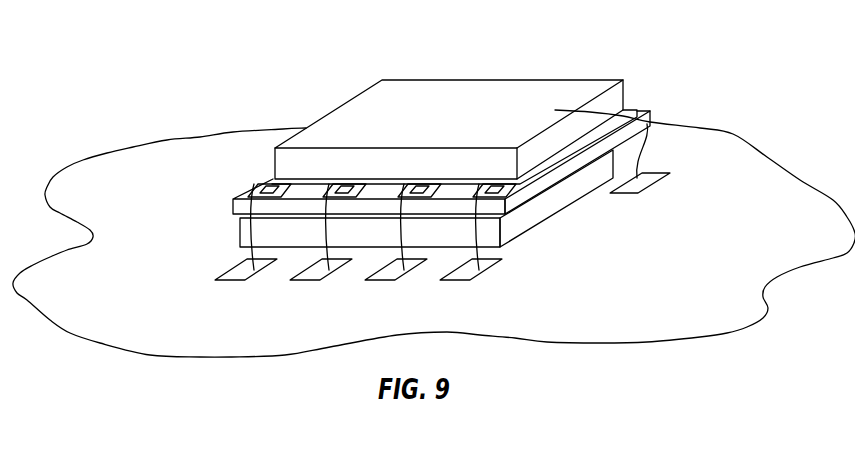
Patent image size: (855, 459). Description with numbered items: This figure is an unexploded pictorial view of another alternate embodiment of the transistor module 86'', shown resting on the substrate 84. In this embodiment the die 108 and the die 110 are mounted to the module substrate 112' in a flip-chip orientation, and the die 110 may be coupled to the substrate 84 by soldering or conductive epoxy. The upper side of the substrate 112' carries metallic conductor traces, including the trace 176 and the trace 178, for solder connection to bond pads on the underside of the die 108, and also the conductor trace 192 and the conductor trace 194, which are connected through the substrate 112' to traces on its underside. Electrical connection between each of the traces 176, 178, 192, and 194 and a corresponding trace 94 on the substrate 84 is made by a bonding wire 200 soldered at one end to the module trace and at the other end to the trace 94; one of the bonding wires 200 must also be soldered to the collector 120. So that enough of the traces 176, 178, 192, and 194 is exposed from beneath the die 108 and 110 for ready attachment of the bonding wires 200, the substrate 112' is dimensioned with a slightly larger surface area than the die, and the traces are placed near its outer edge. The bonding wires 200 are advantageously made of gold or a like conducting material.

The substrate 84 is at (157, 249).
The transistor module 86'' is at (282, 37).
The collector 120 is at (449, 110).
The die 108 is at (479, 121).
The substrate 112' is at (473, 149).
The conductor trace 194 is at (577, 172).
The die 110 is at (426, 206).
The metallic conductor trace 176 is at (243, 174).
The conductor trace 192 is at (374, 154).
The trace 178 is at (450, 154).
The trace 94 is at (475, 216).
The bonding wire 200 is at (463, 263).